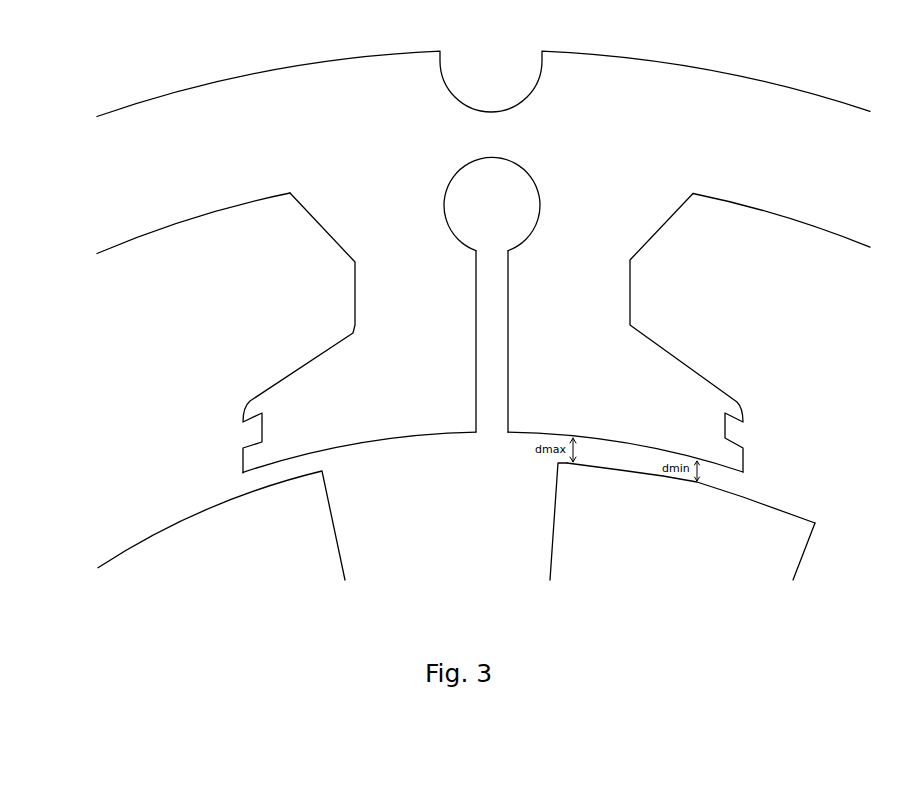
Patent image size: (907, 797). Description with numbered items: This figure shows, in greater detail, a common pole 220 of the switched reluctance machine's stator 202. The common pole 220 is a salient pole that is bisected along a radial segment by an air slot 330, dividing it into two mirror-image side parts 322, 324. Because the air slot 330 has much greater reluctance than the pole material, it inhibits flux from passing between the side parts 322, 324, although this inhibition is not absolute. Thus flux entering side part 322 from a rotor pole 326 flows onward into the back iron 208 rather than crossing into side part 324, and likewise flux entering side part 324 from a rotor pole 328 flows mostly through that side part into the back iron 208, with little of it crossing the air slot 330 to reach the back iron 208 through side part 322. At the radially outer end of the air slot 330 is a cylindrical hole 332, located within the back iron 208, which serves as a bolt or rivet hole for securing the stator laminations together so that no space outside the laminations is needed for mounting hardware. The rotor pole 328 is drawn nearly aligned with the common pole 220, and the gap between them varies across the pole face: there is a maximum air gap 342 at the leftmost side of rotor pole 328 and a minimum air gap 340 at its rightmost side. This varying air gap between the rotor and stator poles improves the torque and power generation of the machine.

The stator 202 is at (217, 82).
The back iron 208 is at (818, 156).
The common pole 220 is at (347, 448).
The side part 322 is at (390, 352).
The side part 324 is at (575, 342).
The rotor pole 326 is at (168, 528).
The rotor pole 328 is at (782, 510).
The air slot 330 is at (496, 424).
The cylindrical hole 332 is at (470, 227).
The minimum air gap 340 is at (745, 498).
The maximum air gap 342 is at (597, 468).